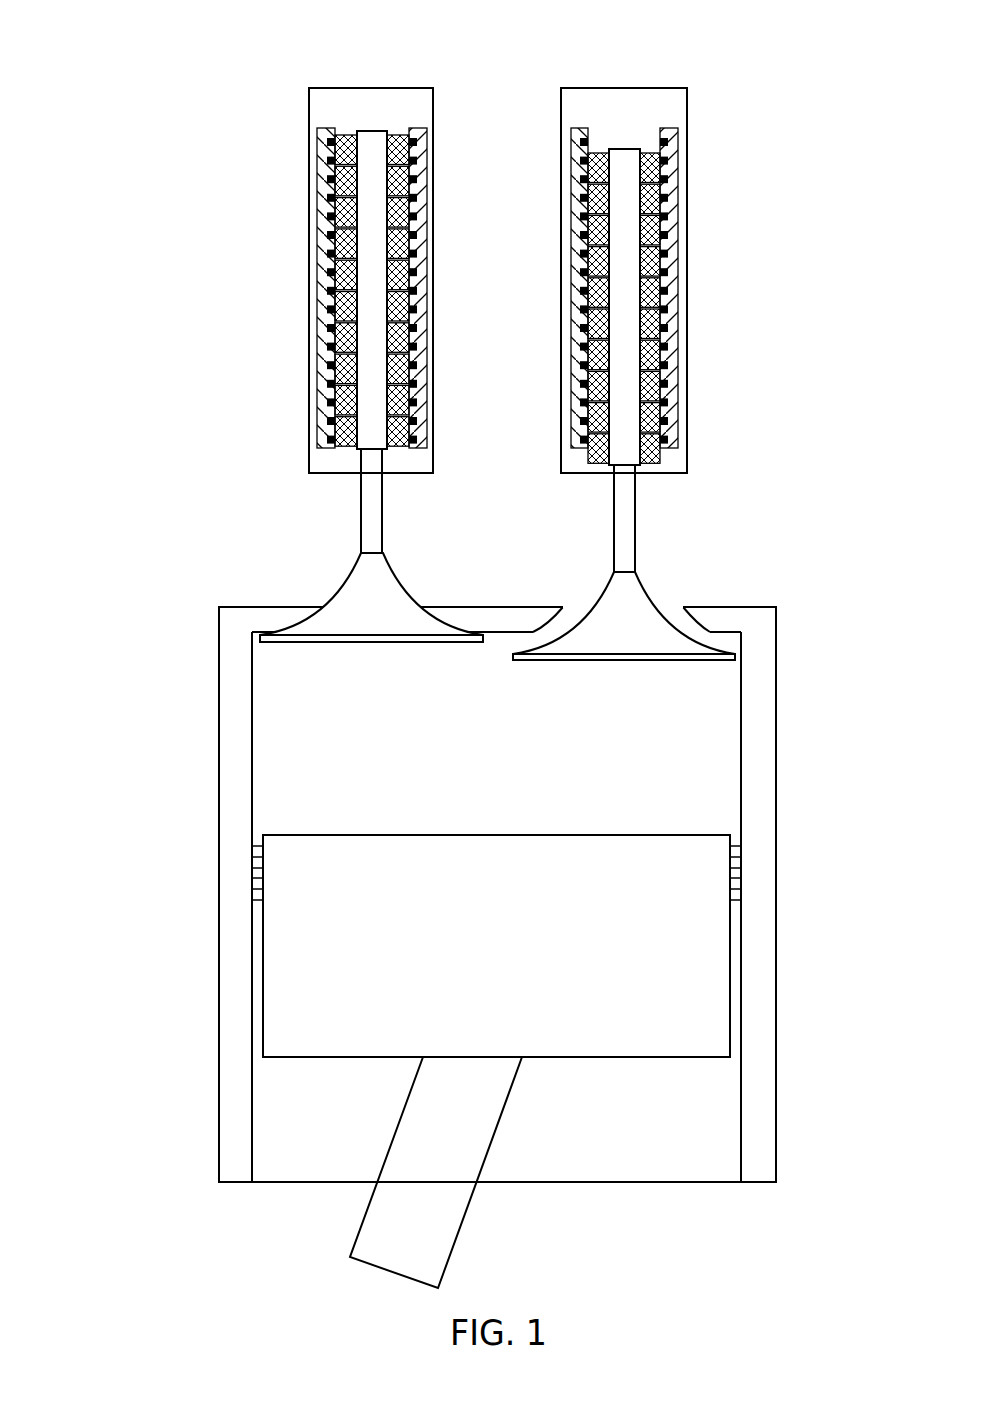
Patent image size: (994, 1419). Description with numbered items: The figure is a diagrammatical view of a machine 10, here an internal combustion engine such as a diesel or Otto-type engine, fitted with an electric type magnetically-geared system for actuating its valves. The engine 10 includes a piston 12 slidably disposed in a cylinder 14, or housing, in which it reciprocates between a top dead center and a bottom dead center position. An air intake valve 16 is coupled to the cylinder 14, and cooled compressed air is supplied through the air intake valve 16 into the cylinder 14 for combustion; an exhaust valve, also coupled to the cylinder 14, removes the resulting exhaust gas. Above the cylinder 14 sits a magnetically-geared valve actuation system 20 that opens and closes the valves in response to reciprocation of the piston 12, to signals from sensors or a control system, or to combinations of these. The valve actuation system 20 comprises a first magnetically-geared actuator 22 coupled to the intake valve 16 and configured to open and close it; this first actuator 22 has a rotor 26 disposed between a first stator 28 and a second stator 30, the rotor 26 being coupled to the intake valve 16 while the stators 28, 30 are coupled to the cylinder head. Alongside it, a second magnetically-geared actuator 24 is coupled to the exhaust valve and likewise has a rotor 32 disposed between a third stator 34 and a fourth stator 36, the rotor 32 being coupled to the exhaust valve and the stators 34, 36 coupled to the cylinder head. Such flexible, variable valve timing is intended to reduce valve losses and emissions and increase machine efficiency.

The machine 10 is at (145, 40).
The piston 12 is at (503, 842).
The cylinder 14 is at (228, 767).
The air intake valve 16 is at (338, 596).
The magnetically-geared valve actuation system 20 is at (632, 37).
The first magnetically-geared actuator 22 is at (307, 212).
The second magnetically-geared actuator 24 is at (690, 205).
The rotor 26 is at (371, 131).
The first stator 28 is at (325, 128).
The second stator 30 is at (416, 128).
The rotor 32 is at (625, 149).
The third stator 34 is at (578, 128).
The fourth stator 36 is at (668, 128).